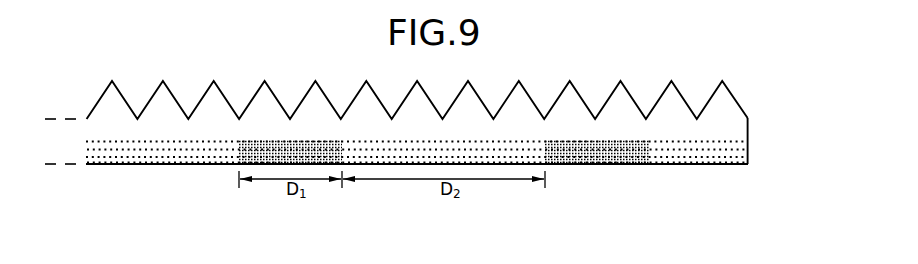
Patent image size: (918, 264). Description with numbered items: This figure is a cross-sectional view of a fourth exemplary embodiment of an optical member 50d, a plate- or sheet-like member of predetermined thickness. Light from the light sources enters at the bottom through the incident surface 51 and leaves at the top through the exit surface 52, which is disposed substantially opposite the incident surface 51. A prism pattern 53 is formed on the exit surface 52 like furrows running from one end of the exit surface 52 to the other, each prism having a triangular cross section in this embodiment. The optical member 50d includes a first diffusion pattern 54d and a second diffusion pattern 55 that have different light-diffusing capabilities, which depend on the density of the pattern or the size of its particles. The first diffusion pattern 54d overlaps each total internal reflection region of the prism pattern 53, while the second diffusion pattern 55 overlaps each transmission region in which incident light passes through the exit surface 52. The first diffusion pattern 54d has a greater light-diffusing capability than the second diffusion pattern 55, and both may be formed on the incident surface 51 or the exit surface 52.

The optical member 50d is at (806, 95).
The incident surface 51 is at (585, 163).
The exit surface 52 is at (728, 90).
The prism pattern 53 is at (725, 107).
The first diffusion pattern 54d is at (620, 163).
The second diffusion pattern 55 is at (715, 157).